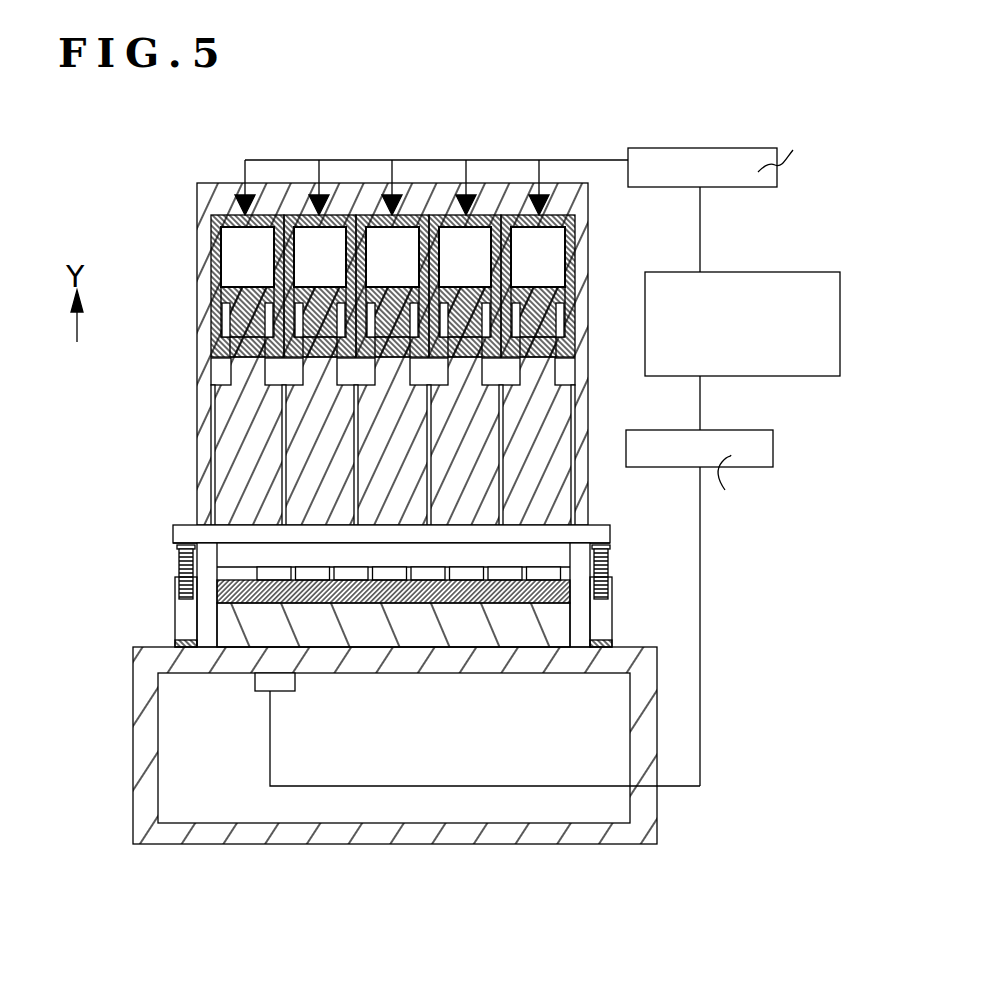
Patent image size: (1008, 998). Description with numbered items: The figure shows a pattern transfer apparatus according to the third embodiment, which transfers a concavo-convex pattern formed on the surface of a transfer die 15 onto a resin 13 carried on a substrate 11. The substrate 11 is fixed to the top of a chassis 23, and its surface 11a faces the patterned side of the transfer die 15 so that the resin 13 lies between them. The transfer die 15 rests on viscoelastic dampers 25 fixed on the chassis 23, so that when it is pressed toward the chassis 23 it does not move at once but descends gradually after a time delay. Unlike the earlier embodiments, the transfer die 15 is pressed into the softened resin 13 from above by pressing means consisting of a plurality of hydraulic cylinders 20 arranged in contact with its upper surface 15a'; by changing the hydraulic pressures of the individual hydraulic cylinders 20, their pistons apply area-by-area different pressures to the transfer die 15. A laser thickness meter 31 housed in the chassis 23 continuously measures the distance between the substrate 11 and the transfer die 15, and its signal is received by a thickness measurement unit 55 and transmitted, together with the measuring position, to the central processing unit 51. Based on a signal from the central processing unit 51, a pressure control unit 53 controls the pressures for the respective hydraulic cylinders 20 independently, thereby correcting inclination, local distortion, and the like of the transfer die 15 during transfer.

The hydraulic cylinder 20 is at (300, 222).
The transfer die 15 is at (587, 540).
The surface of transfer die 15a' is at (354, 515).
The viscoelastic damper 25 is at (177, 578).
The resin 13 is at (565, 595).
The substrate 11 is at (563, 622).
The surface of substrate 11a is at (218, 589).
The chassis 23 is at (135, 682).
The laser thickness meter 31 is at (283, 686).
The central processing unit 51 is at (817, 272).
The pressure control unit 53 is at (753, 136).
The thickness measurement unit 55 is at (740, 430).